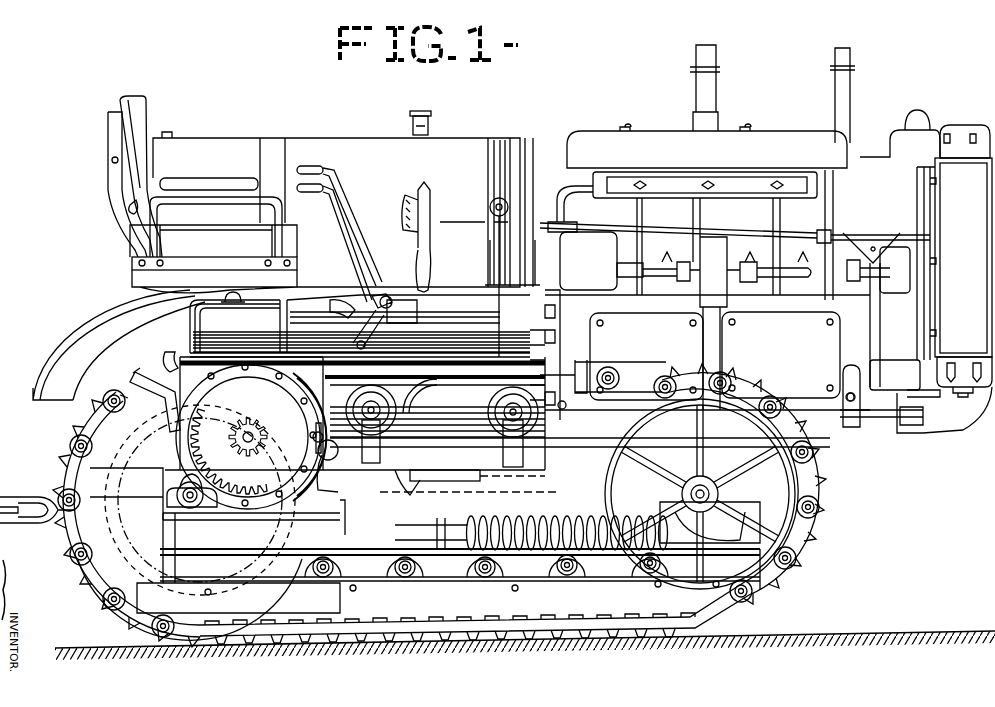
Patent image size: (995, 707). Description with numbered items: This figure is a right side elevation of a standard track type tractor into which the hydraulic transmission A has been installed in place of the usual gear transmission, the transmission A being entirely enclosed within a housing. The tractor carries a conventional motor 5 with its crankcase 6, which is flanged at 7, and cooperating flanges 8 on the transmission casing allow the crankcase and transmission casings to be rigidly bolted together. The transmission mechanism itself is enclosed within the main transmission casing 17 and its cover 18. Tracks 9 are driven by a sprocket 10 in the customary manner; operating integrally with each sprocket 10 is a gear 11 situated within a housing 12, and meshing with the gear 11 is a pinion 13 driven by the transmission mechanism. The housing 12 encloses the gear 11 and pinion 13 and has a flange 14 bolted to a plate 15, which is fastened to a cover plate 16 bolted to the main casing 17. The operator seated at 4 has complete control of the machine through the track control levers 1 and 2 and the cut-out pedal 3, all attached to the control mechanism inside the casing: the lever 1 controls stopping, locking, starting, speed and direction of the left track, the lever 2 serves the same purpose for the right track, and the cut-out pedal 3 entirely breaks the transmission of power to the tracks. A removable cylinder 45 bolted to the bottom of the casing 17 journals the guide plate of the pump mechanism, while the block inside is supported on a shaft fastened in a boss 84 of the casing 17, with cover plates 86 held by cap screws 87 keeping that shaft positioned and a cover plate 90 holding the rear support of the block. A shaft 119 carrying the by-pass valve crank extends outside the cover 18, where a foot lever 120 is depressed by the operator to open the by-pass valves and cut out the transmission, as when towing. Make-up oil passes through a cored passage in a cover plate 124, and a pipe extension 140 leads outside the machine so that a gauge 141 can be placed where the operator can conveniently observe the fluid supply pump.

The track control lever 1 is at (332, 184).
The track control lever 2 is at (342, 209).
The cut-out pedal 3 is at (378, 298).
The operator's seat 4 is at (207, 200).
The motor 5 is at (733, 146).
The crankcase 6 is at (797, 351).
The flange 7 is at (542, 327).
The cooperating flanges 8 is at (538, 327).
The tracks 9 is at (820, 489).
The sprocket 10 is at (150, 376).
The gear 11 is at (215, 496).
The housing 12 is at (168, 440).
The pinion 13 is at (262, 420).
The flange 14 is at (150, 472).
The plate 15 is at (210, 413).
The cover plate 16 is at (235, 372).
The main transmission casing 17 is at (480, 399).
The cover 18 is at (262, 310).
The removable cylinder 45 is at (392, 499).
The boss 84 is at (407, 488).
The cover plates 86 is at (330, 443).
The cap screws 87 is at (330, 494).
The cover plate 90 is at (168, 353).
The shaft 119 is at (355, 343).
The foot lever 120 is at (350, 305).
The cover plate 124 is at (462, 474).
The pipe extension 140 is at (515, 279).
The gauge 141 is at (508, 196).
The transmission A is at (200, 312).